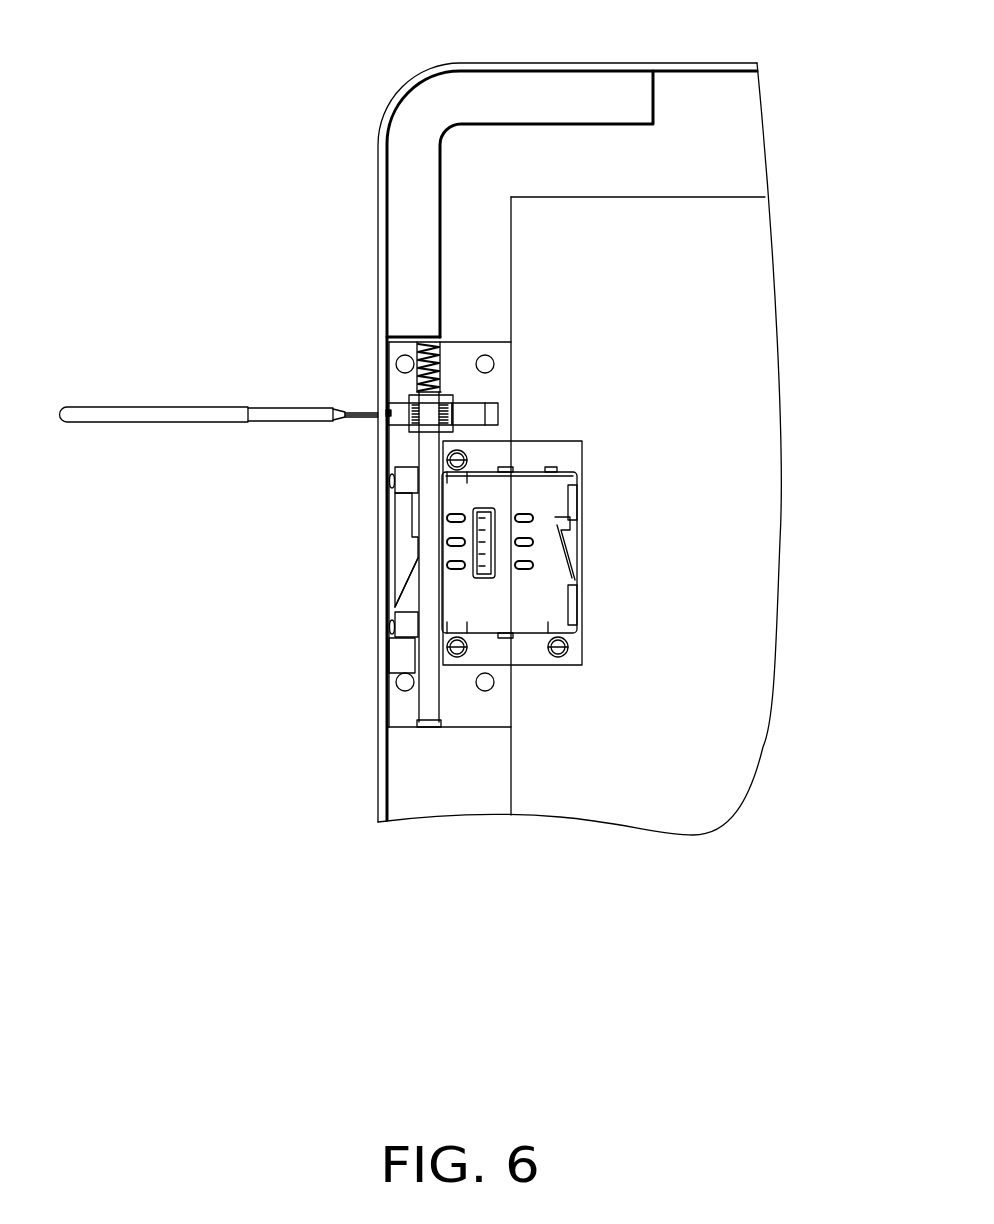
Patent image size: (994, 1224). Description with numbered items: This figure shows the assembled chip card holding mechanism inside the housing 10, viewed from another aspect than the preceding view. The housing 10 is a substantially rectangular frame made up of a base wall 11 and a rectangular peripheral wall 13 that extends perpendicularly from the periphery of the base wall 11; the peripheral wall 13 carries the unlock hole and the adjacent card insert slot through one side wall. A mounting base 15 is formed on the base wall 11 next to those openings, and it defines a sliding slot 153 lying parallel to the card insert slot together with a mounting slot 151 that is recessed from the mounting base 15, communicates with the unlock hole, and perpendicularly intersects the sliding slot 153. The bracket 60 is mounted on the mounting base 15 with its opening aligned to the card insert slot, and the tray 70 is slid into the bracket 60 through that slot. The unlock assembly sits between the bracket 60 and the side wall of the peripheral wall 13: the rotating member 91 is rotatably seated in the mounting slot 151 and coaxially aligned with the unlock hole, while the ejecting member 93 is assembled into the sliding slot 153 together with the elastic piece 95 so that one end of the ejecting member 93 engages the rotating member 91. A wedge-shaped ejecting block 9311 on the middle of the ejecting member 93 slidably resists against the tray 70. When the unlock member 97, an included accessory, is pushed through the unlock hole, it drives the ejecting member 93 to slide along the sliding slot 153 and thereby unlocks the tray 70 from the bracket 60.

The housing 10 is at (515, 52).
The base wall 11 is at (752, 262).
The peripheral wall 13 is at (383, 222).
The mounting base 15 is at (562, 452).
The mounting slot 151 is at (490, 412).
The sliding slot 153 is at (398, 362).
The bracket 60 is at (547, 492).
The tray 70 is at (402, 515).
The rotating member 91 is at (398, 408).
The ejecting member 93 is at (427, 663).
The ejecting block 9311 is at (403, 597).
The elastic piece 95 is at (420, 345).
The unlock member 97 is at (147, 412).